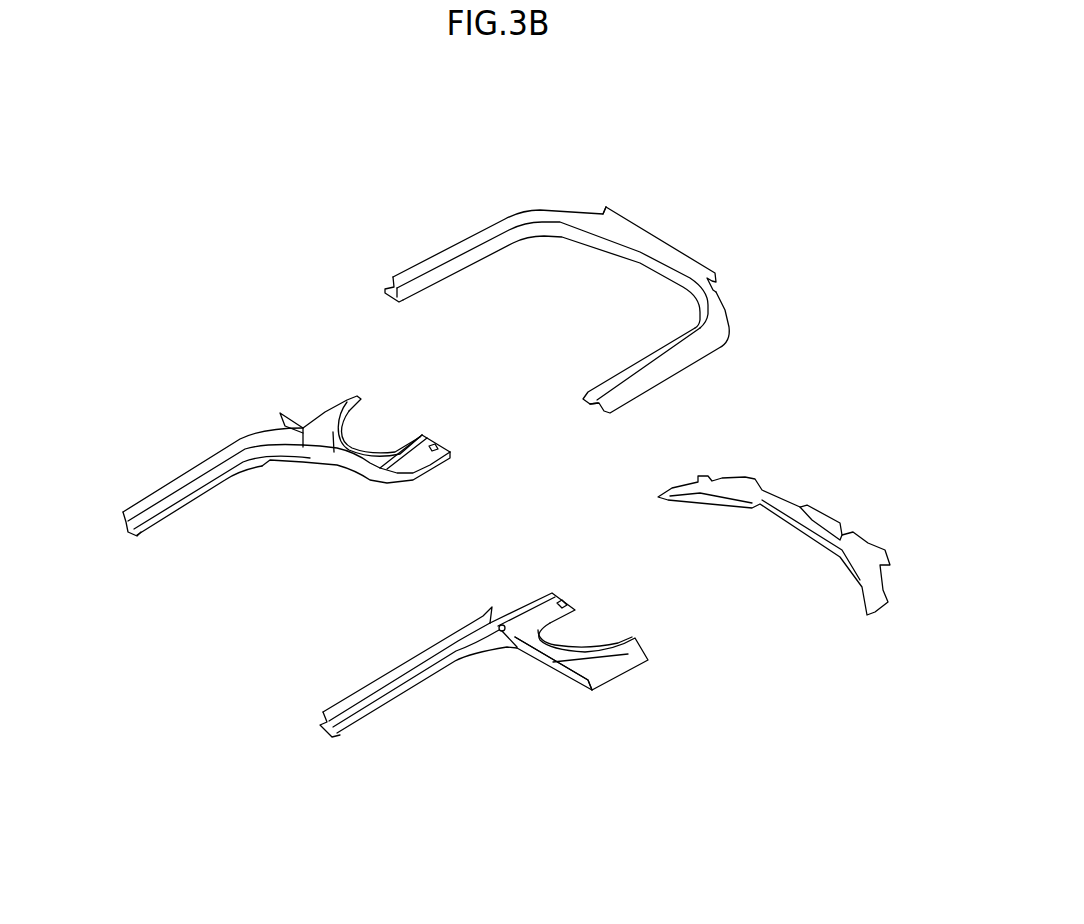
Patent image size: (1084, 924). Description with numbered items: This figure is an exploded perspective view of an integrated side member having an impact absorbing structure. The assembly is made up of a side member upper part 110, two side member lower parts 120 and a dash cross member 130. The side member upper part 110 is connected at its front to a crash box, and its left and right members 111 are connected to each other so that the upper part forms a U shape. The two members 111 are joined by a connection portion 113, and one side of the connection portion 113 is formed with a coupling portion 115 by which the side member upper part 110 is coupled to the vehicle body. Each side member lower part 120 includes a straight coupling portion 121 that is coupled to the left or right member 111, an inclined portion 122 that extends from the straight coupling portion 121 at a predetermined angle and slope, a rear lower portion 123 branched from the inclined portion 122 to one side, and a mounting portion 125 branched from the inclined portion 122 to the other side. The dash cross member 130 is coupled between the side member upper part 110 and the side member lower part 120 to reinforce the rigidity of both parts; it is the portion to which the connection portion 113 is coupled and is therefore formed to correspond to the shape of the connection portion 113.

The side member upper part 110 is at (593, 261).
The left and right members 111 is at (452, 243).
The connection portion 113 is at (654, 248).
The coupling portion 115 is at (715, 258).
The side member lower part 120 is at (401, 546).
The straight coupling portion 121 is at (220, 483).
The inclined portion 122 is at (322, 462).
The rear lower portion 123 is at (323, 412).
The mounting portion 125 is at (427, 457).
The dash cross member 130 is at (787, 505).